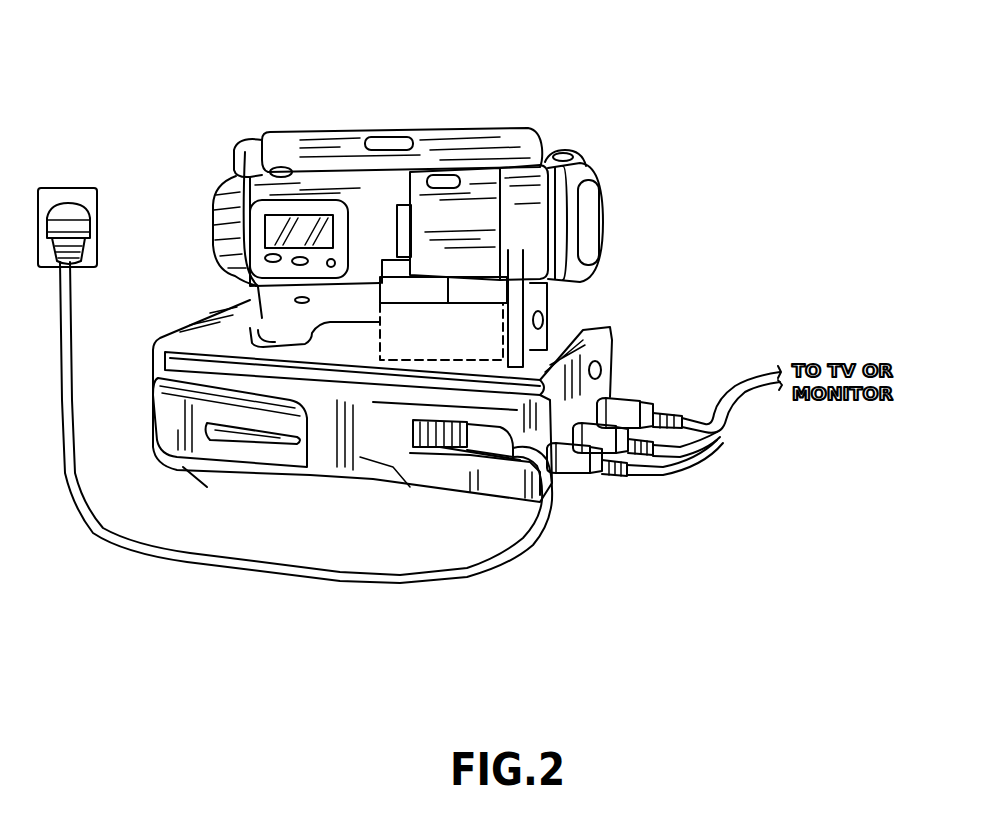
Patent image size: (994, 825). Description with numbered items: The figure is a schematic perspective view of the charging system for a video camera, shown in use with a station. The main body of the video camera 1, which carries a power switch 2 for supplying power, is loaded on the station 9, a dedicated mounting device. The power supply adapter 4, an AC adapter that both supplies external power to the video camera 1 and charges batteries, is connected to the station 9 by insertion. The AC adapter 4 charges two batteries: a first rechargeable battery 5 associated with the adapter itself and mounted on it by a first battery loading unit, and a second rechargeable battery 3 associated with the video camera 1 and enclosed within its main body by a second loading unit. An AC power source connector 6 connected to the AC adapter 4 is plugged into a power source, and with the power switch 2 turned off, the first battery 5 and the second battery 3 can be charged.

The video camera 1 is at (466, 122).
The power switch 2 is at (290, 167).
The second rechargeable battery 3 is at (488, 330).
The power supply adapter 4 is at (323, 474).
The first rechargeable battery 5 is at (203, 470).
The AC power source connector 6 is at (92, 222).
The station 9 is at (618, 330).